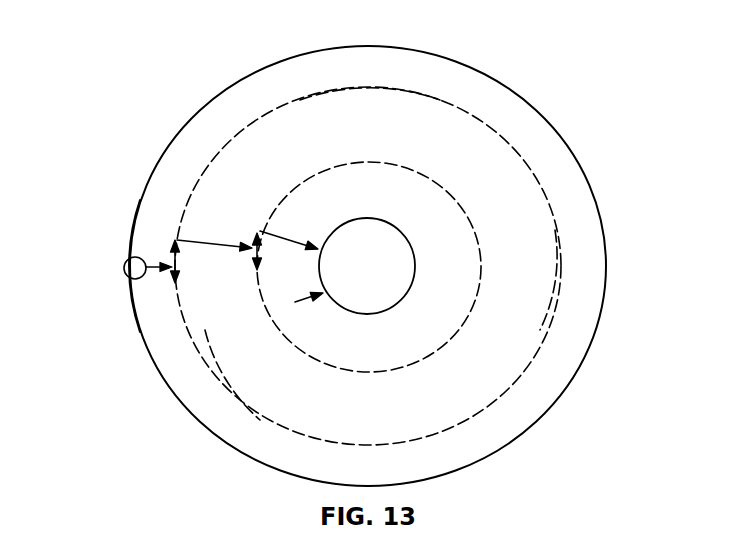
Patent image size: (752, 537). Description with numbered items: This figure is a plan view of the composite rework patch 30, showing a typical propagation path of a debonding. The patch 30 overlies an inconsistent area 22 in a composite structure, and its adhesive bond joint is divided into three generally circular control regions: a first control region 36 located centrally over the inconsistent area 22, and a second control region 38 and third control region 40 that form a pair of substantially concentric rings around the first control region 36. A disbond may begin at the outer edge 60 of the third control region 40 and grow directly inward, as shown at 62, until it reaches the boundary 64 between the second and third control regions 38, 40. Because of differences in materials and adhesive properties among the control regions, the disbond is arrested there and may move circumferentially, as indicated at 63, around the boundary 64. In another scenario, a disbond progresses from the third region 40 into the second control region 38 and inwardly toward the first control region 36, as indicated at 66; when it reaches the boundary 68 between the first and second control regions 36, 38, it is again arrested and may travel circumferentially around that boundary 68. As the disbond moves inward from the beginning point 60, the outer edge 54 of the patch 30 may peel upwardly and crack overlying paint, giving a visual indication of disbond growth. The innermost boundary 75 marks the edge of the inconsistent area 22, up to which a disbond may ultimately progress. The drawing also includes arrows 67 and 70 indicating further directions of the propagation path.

The composite rework patch 30 is at (580, 112).
The inconsistent area 22 is at (390, 255).
The first control region 36 is at (350, 180).
The second control region 38 is at (226, 349).
The third control region 40 is at (553, 360).
The outer edge of the rework patch 54 is at (113, 290).
The outer edge of the third control region 60 is at (130, 270).
The inward disbond growth 62 is at (152, 266).
The circumferential disbond movement 63 is at (172, 274).
The boundary of the third control region 64 is at (517, 390).
The inward disbond progression 66 is at (197, 240).
The inner boundary 67 is at (415, 368).
The boundary between first and second control regions 68 is at (250, 265).
The flow path 70 is at (285, 233).
The boundary of the inconsistent area 75 is at (295, 302).